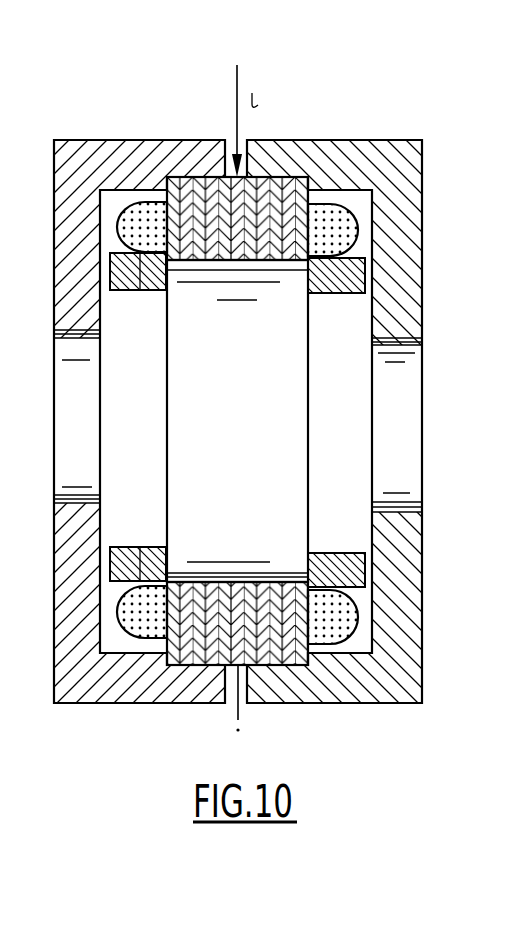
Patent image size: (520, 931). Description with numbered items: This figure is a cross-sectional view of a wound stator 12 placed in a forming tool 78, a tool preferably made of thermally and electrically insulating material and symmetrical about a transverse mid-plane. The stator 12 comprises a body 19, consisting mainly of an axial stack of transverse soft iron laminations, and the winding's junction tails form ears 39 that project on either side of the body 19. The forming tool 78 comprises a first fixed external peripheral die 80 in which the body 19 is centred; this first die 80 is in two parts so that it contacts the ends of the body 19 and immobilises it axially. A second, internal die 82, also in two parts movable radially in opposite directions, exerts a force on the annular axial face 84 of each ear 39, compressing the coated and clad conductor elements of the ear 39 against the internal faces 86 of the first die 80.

The stator 12 is at (229, 130).
The body 19 is at (288, 177).
The ear 39 is at (350, 213).
The forming tool 78 is at (341, 132).
The first fixed external peripheral die 80 is at (75, 162).
The second internal die 82 is at (338, 293).
The annular axial face 84 is at (143, 291).
The internal faces 86 is at (128, 192).